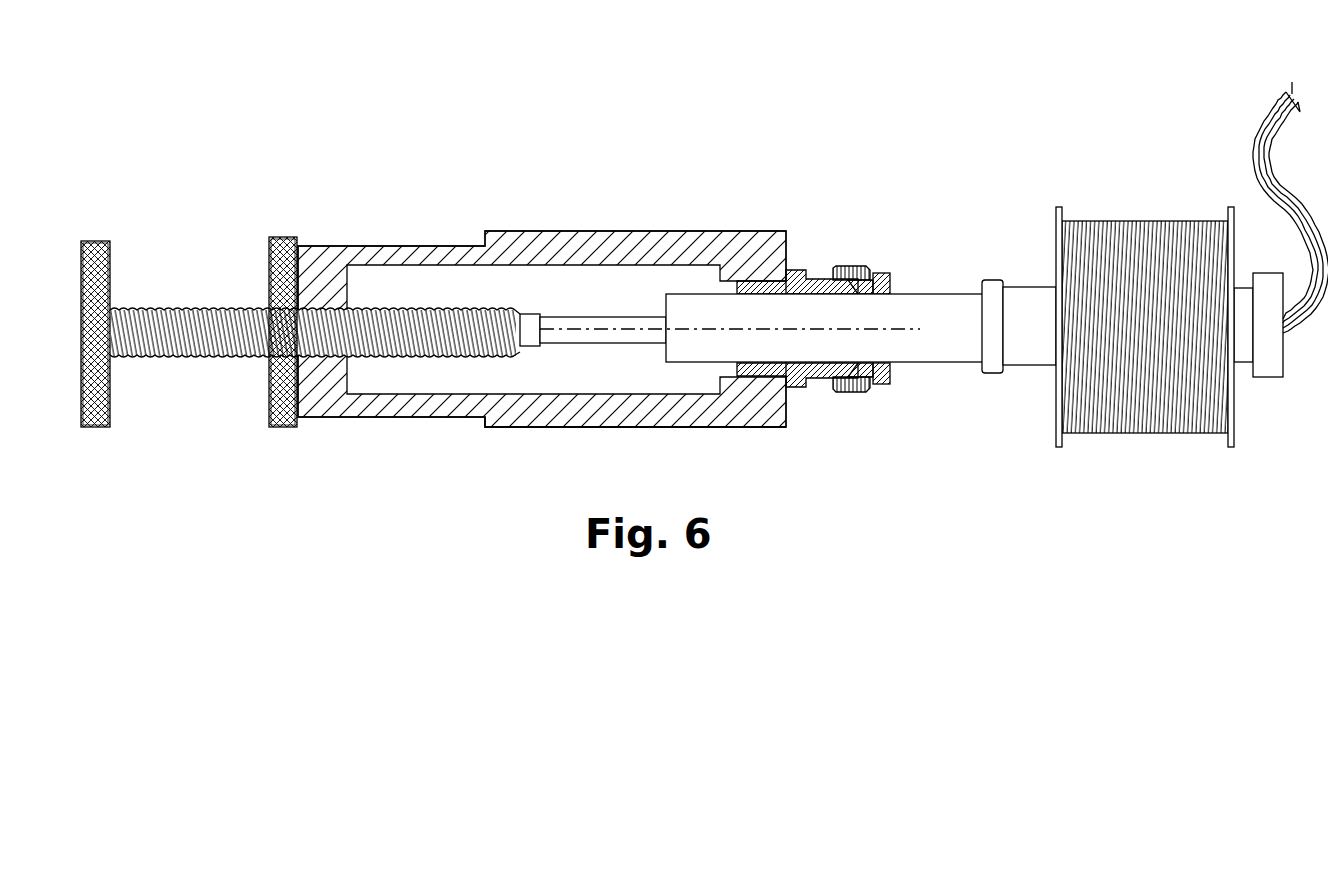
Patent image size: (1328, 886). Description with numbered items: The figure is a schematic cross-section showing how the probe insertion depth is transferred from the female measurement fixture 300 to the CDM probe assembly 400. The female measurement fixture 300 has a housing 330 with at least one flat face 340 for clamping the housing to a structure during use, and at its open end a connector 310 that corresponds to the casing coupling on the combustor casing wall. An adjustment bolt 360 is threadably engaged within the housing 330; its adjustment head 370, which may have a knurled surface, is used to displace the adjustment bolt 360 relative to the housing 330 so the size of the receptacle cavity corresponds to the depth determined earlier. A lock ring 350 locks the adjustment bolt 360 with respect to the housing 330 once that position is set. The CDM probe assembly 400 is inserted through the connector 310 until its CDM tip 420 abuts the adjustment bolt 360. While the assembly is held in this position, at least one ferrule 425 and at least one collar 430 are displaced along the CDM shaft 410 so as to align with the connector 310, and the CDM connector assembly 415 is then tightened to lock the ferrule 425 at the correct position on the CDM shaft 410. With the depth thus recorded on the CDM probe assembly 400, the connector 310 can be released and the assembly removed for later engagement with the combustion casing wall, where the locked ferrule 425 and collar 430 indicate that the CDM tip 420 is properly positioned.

The female measurement fixture 300 is at (615, 216).
The connector 310 is at (800, 388).
The housing 330 is at (495, 414).
The flat face 340 is at (353, 242).
The lock ring 350 is at (280, 427).
The adjustment bolt 360 is at (162, 370).
The adjustment head 370 is at (95, 427).
The CDM probe assembly 400 is at (1048, 478).
The CDM shaft 410 is at (939, 368).
The CDM connector assembly 415 is at (882, 398).
The CDM tip 420 is at (548, 348).
The ferrule 425 is at (862, 278).
The collar 430 is at (881, 272).